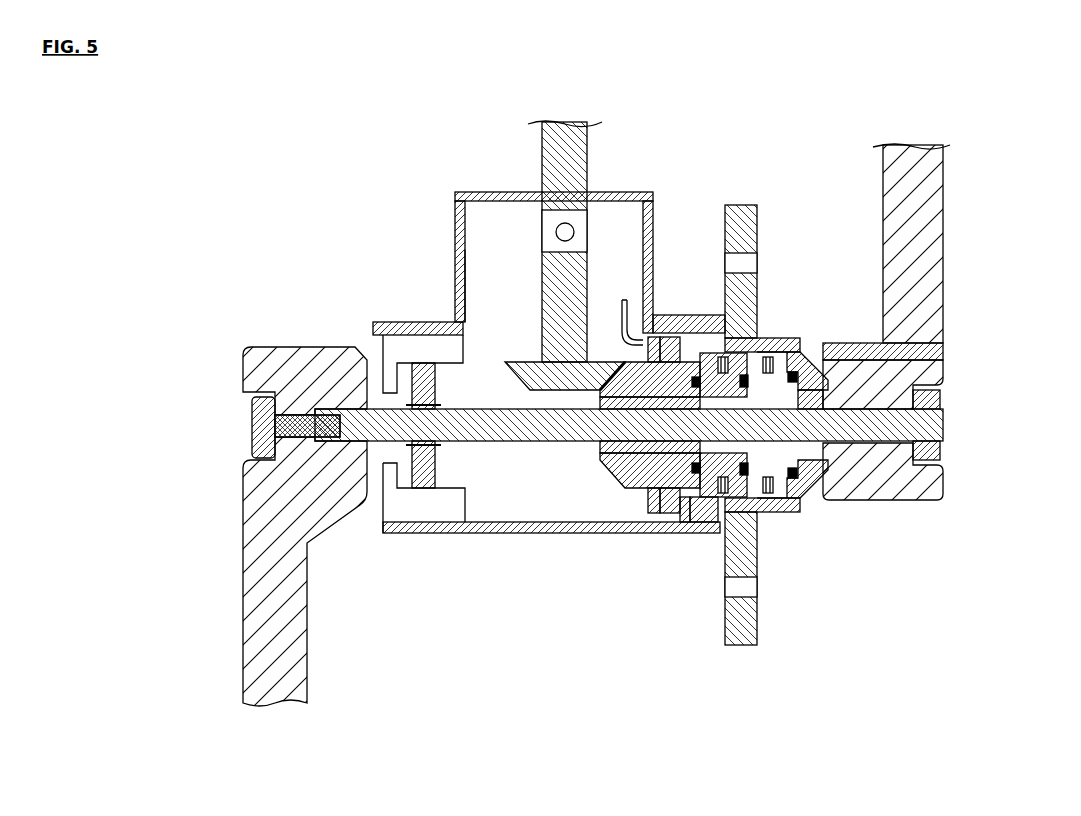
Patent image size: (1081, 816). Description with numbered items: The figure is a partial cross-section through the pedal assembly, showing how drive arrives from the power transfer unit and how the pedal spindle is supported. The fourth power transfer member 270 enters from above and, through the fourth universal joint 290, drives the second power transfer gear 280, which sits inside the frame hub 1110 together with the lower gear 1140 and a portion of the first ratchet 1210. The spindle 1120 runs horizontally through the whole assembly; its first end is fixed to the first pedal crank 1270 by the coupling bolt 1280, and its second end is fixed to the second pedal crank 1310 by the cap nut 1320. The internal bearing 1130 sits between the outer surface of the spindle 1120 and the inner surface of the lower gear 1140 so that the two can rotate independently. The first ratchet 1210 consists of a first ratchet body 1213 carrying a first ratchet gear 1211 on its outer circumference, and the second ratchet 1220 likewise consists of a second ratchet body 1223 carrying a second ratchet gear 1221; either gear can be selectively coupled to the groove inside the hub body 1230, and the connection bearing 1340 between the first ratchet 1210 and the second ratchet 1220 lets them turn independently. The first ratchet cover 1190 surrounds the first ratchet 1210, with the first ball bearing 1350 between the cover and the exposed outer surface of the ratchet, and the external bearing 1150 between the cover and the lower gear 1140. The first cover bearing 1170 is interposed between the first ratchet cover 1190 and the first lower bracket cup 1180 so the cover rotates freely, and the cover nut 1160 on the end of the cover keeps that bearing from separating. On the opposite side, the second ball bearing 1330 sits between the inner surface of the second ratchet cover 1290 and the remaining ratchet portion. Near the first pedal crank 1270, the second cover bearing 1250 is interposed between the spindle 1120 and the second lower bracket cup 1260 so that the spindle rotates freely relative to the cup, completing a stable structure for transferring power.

The fourth power transfer member 270 is at (572, 160).
The second power transfer gear 280 is at (458, 300).
The fourth universal joint 290 is at (548, 222).
The frame hub 1110 is at (458, 237).
The spindle 1120 is at (928, 418).
The internal bearing 1130 is at (627, 488).
The lower gear 1140 is at (602, 462).
The external bearing 1150 is at (640, 495).
The cover nut 1160 is at (643, 485).
The first cover bearing 1170 is at (690, 317).
The first lower bracket cup 1180 is at (620, 318).
The first ratchet cover 1190 is at (700, 500).
The first ratchet 1210 is at (602, 460).
The first ratchet gear 1211 is at (757, 527).
The first ratchet body 1213 is at (770, 508).
The second ratchet 1220 is at (768, 340).
The second ratchet gear 1221 is at (805, 345).
The second ratchet body 1223 is at (835, 388).
The hub body 1230 is at (745, 205).
The second cover bearing 1250 is at (422, 490).
The second lower bracket cup 1260 is at (380, 352).
The first pedal crank 1270 is at (278, 603).
The coupling bolt 1280 is at (257, 418).
The second ratchet cover 1290 is at (807, 492).
The second pedal crank 1310 is at (925, 237).
The cap nut 1320 is at (943, 449).
The second ball bearing 1330 is at (833, 367).
The connection bearing 1340 is at (827, 470).
The first ball bearing 1350 is at (705, 480).